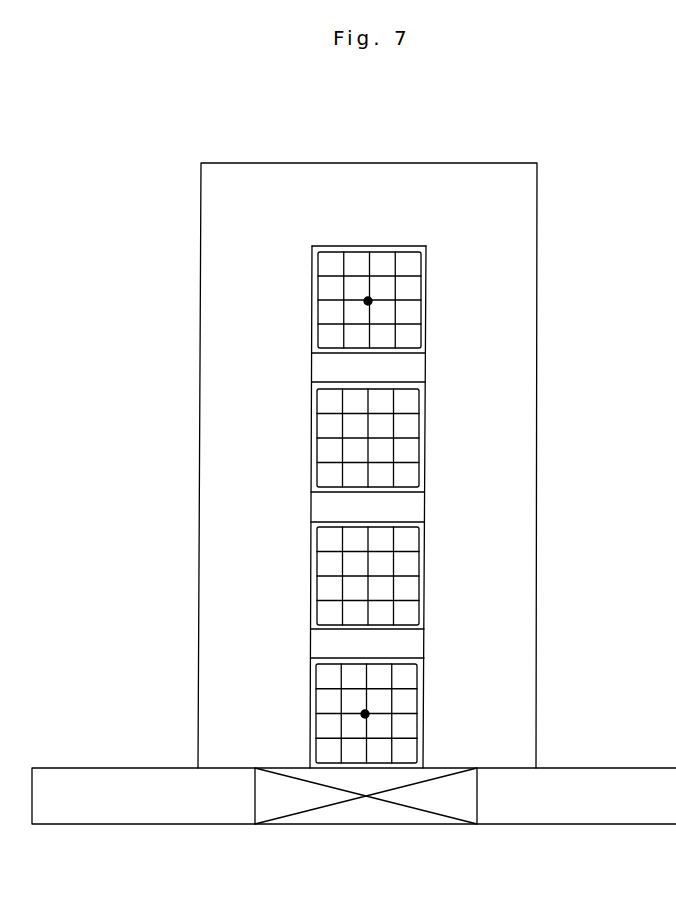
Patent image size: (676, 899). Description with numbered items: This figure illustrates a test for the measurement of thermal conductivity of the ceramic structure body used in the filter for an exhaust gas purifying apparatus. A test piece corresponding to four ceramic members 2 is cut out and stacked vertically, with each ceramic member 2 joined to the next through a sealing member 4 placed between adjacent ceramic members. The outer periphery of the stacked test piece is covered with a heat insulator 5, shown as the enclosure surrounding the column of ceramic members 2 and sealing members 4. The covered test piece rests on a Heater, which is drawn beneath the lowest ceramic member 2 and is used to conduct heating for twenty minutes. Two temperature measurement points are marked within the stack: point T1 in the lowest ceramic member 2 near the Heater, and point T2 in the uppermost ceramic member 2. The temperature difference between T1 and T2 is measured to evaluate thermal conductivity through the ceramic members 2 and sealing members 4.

The ceramic member 2 is at (410, 293).
The sealing member 4 is at (340, 367).
The heat insulator 5 is at (522, 205).
The temperature measurement point T1 is at (365, 714).
The temperature measurement point T2 is at (369, 301).
The heater Heater is at (414, 818).